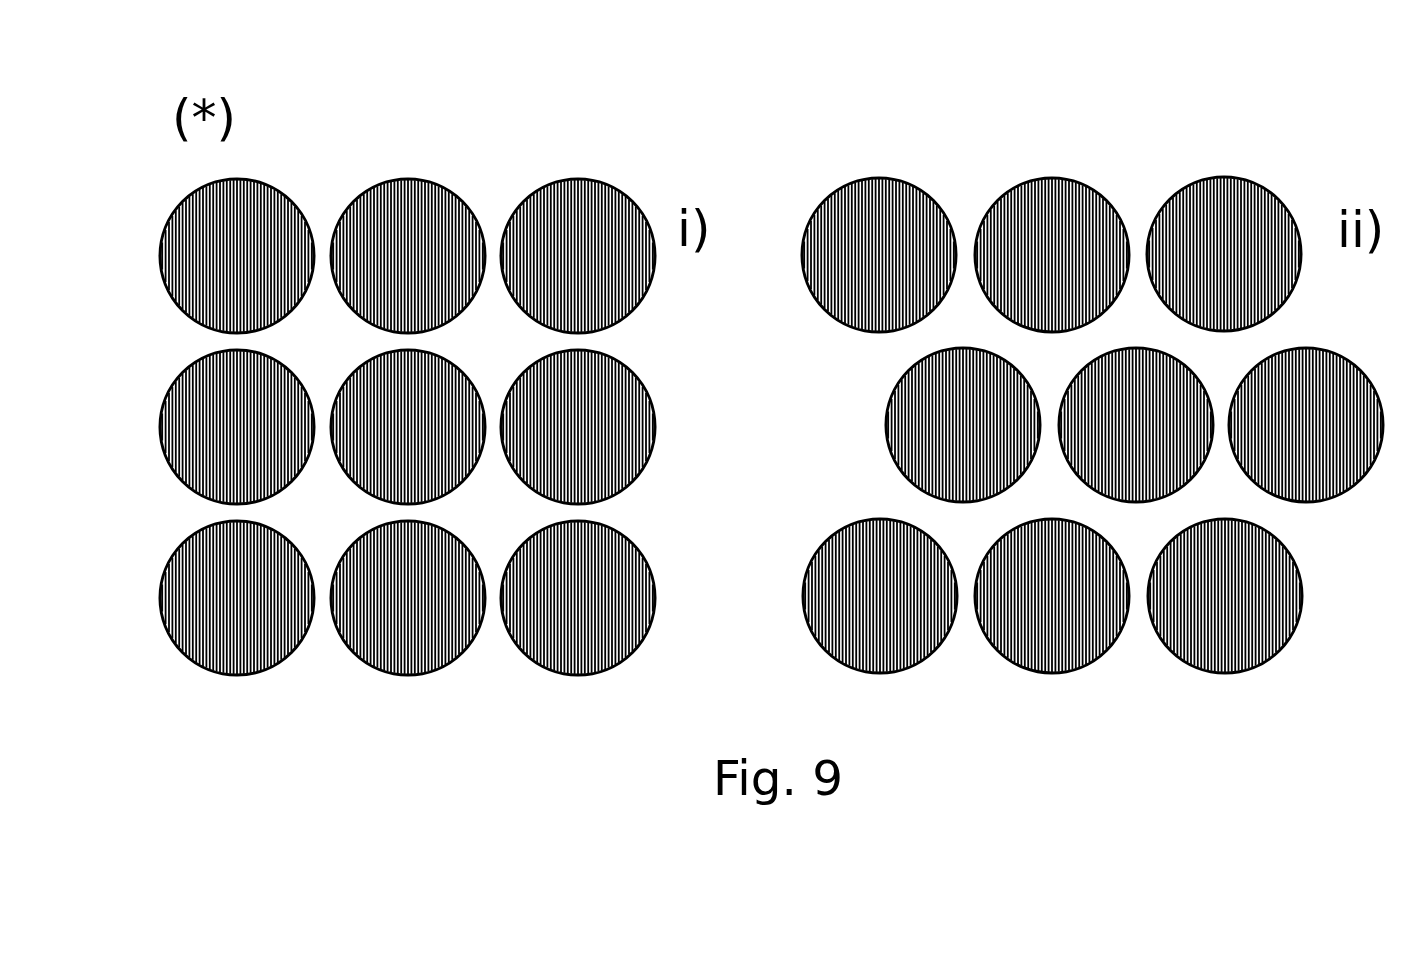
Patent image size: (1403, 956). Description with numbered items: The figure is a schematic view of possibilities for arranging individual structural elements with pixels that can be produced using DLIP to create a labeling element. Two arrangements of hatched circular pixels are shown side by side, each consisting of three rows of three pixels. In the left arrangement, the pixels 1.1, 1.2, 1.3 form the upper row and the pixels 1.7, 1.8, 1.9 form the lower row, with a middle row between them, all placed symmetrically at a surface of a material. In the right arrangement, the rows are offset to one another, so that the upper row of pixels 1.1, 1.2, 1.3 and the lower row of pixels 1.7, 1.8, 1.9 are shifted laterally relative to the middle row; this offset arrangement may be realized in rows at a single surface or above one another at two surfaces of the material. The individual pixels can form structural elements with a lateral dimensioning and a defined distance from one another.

The pixel 1.1 is at (595, 203).
The pixel 1.2 is at (437, 205).
The pixel 1.3 is at (250, 197).
The pixel 1.7 is at (582, 662).
The pixel 1.8 is at (402, 675).
The pixel 1.9 is at (228, 660).